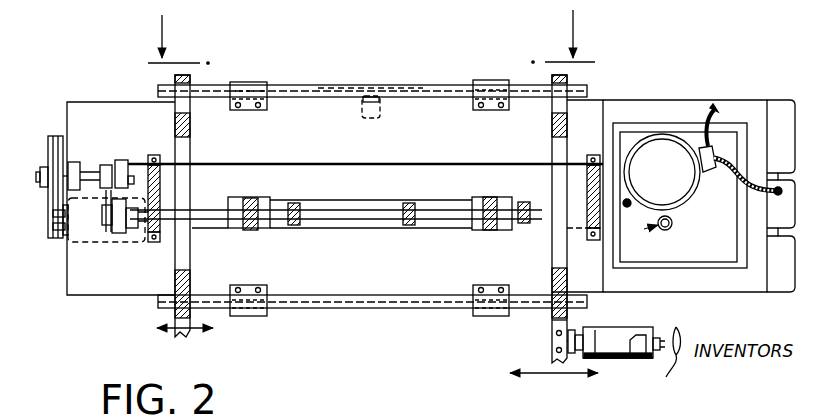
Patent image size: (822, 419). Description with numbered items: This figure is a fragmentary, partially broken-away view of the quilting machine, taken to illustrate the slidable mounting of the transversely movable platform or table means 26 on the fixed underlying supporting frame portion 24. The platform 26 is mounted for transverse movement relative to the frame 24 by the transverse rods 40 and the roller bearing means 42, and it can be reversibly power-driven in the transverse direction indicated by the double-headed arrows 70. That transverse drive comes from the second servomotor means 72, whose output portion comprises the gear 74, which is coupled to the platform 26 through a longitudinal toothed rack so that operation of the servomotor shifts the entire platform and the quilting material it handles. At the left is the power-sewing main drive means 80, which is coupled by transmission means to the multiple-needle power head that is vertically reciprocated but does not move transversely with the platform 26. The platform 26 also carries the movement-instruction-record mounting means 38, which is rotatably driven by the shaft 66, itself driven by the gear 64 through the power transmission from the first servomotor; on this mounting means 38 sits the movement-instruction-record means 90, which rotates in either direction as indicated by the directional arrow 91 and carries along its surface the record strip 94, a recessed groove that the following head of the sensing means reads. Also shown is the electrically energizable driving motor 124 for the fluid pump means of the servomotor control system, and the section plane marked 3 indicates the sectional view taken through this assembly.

The section line 3- 3 is at (360, 34).
The fixed underlying supporting frame portion 24 is at (131, 95).
The transversely slidably movable platform or table means 26 is at (197, 146).
The movement-instruction-record mounting means 38 is at (618, 364).
The transverse rods 40 is at (303, 84).
The roller bearing means 42 is at (252, 82).
The gear 64 is at (553, 338).
The shaft 66 is at (581, 331).
The double-headed arrows 70 is at (198, 333).
The second servomotor means 72 is at (380, 118).
The gear 74 is at (372, 88).
The power-sewing main drive means 80 is at (54, 249).
The movement-instruction-record means 90 is at (645, 338).
The directional arrow 91 is at (618, 372).
The record strip 94 is at (641, 336).
The electrically energizable driving motor 124 is at (702, 167).